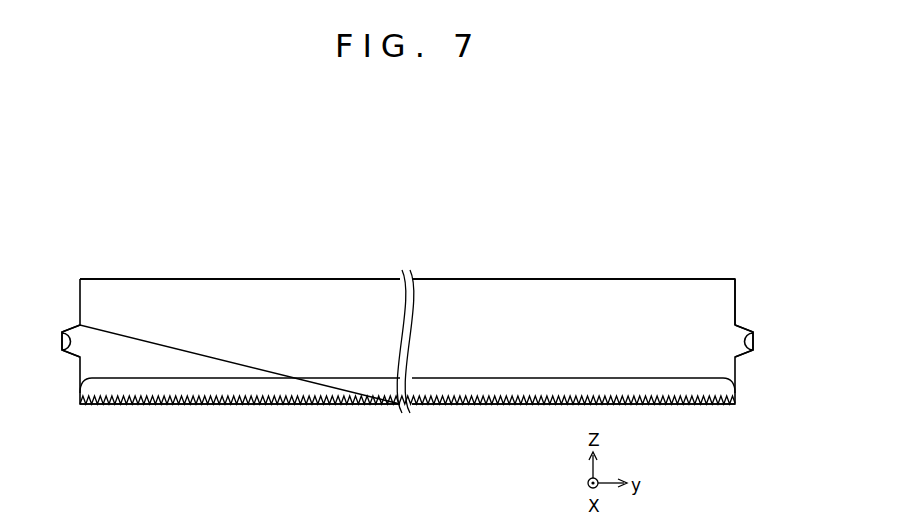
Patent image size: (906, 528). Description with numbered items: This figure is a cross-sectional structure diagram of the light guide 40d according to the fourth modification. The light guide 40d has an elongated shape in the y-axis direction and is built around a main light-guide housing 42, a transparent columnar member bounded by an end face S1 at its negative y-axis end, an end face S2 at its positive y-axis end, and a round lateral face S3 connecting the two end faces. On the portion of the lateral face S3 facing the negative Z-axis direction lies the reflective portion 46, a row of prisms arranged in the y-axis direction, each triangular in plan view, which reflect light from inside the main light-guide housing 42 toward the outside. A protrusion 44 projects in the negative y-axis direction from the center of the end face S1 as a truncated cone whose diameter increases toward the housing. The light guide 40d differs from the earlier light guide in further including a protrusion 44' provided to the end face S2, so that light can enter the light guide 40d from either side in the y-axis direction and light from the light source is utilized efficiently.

The light guide 40d is at (162, 198).
The main light-guide housing 42 is at (350, 279).
The protrusion 44 is at (67, 371).
The protrusion 44' is at (759, 371).
The reflective portion 46 is at (367, 376).
The end face S1 is at (79, 302).
The end face S2 is at (735, 300).
The lateral face S3 is at (228, 279).